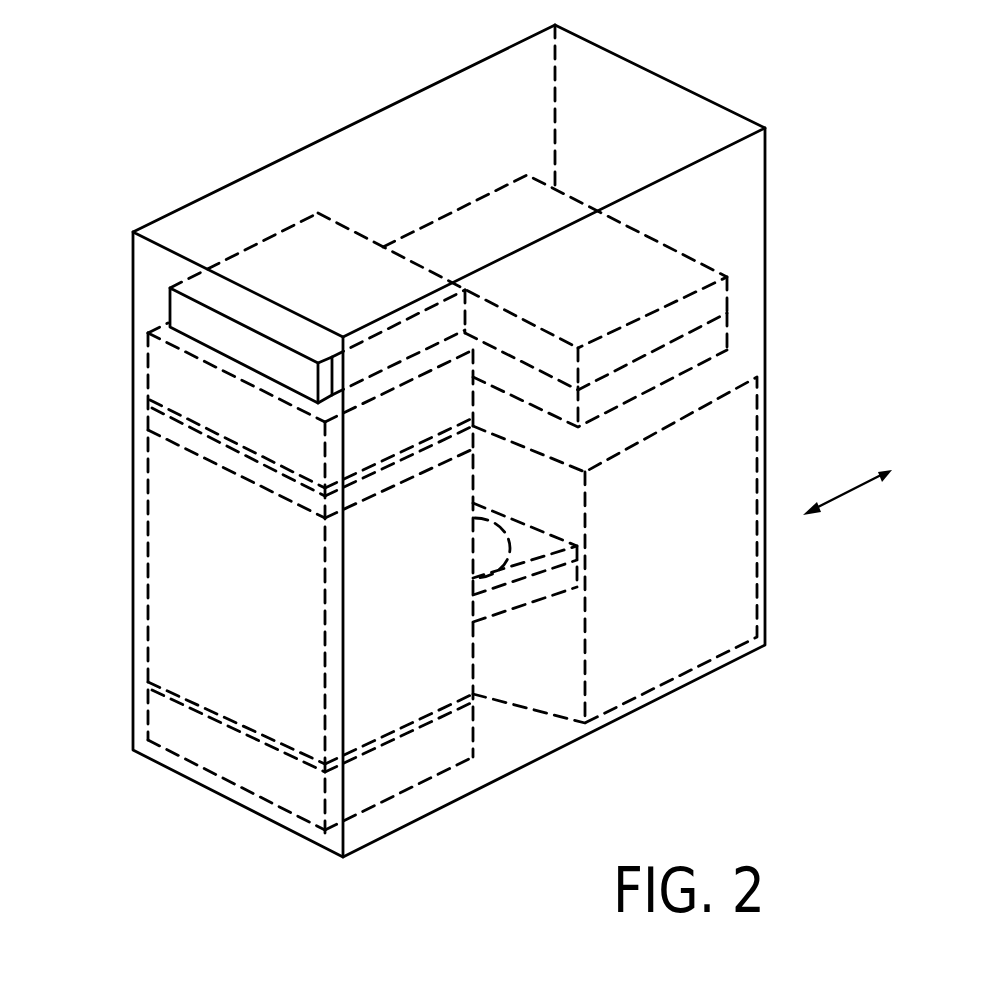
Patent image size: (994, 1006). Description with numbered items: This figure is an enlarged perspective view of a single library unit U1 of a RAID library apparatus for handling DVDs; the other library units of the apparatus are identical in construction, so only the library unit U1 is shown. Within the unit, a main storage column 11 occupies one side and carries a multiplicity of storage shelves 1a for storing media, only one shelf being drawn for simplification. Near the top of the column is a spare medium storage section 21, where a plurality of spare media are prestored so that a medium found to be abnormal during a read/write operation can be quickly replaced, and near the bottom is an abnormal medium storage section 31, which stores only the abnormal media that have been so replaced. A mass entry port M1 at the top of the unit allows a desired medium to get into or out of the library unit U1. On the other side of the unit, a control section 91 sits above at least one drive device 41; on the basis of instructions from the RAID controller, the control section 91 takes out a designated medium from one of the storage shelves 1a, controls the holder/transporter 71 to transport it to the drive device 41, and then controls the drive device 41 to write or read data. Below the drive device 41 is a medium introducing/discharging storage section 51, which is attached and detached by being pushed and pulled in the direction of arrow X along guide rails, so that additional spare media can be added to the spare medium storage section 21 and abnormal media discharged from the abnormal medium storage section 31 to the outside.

The library unit U1 is at (390, 441).
The main storage column 11 is at (128, 611).
The mass entry port M1 is at (183, 314).
The spare medium storage section 21 is at (162, 382).
The storage shelf 1a is at (160, 428).
The abnormal medium storage section 31 is at (160, 728).
The control section 91 is at (713, 298).
The drive device 41 is at (713, 337).
The medium introducing/discharging storage section 51 is at (720, 607).
The holder/transporter 71 is at (550, 578).
The arrow X direction X is at (847, 486).